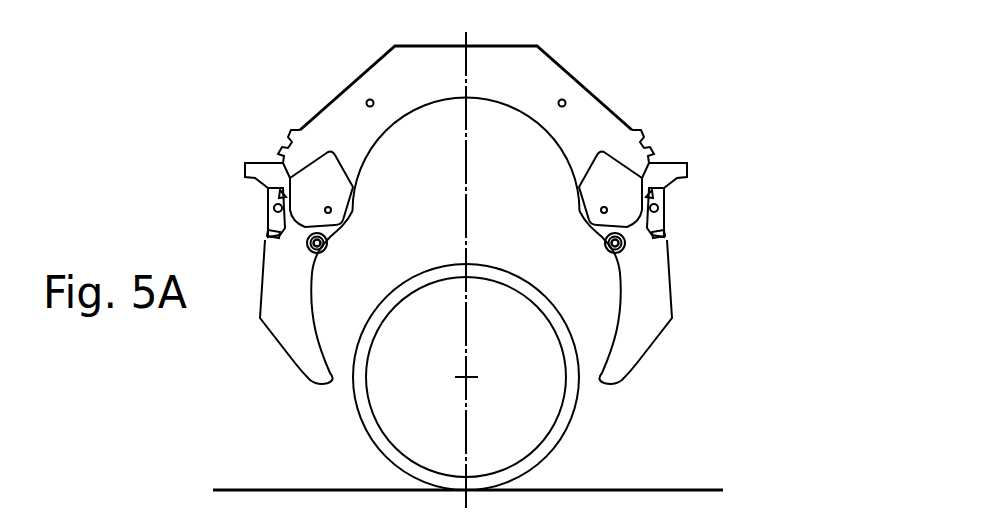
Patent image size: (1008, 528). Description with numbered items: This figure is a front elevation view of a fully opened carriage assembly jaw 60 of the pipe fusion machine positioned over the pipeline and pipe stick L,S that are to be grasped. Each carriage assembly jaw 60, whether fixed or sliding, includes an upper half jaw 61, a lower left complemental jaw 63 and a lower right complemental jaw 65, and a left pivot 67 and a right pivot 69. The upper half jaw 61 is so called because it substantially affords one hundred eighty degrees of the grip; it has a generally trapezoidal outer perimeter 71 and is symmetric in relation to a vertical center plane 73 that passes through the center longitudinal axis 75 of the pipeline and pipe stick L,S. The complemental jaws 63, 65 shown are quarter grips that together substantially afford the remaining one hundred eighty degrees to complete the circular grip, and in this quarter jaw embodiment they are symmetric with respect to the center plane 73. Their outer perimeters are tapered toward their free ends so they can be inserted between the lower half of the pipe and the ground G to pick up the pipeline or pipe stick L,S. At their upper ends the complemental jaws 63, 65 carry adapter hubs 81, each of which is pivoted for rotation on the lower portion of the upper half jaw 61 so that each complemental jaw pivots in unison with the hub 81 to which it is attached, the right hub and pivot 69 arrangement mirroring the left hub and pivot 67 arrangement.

The carriage assembly jaw 60 is at (243, 82).
The upper half jaw 61 is at (563, 85).
The lower left complemental jaw 63 is at (672, 278).
The lower right complemental jaw 65 is at (289, 361).
The left pivot 67 is at (601, 210).
The right pivot 69 is at (331, 210).
The trapezoidal outer perimeter 71 is at (362, 80).
The vertical center plane 73 is at (465, 167).
The center longitudinal axis 75 is at (467, 377).
The adapter hub 81 is at (268, 214).
The ground G is at (668, 490).
The pipeline and pipe stick L,S is at (368, 402).